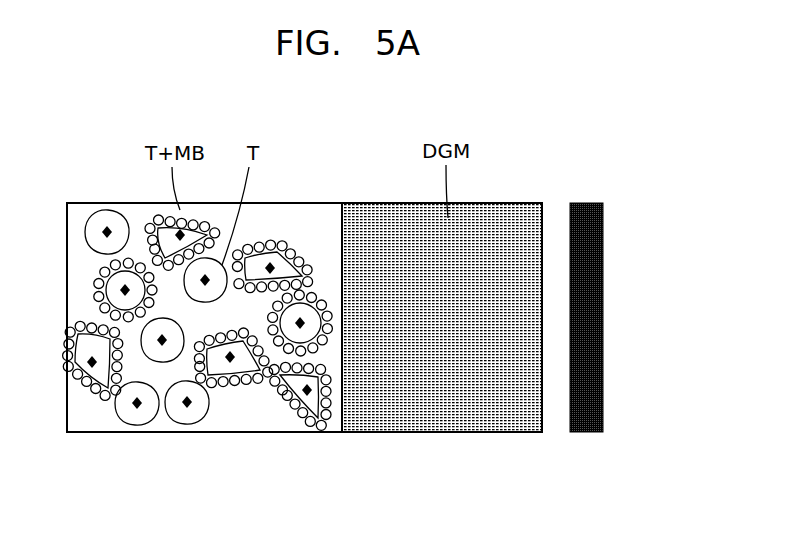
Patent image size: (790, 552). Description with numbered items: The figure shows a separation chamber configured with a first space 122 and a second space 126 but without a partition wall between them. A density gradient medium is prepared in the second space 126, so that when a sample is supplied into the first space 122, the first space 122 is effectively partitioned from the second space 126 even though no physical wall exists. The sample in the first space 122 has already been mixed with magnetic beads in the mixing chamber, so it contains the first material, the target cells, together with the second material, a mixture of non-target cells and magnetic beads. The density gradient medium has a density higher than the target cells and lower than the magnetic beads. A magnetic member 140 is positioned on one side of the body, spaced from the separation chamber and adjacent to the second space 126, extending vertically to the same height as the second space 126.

The first space 122 is at (342, 496).
The second space 126 is at (542, 462).
The magnetic member 140 is at (603, 322).